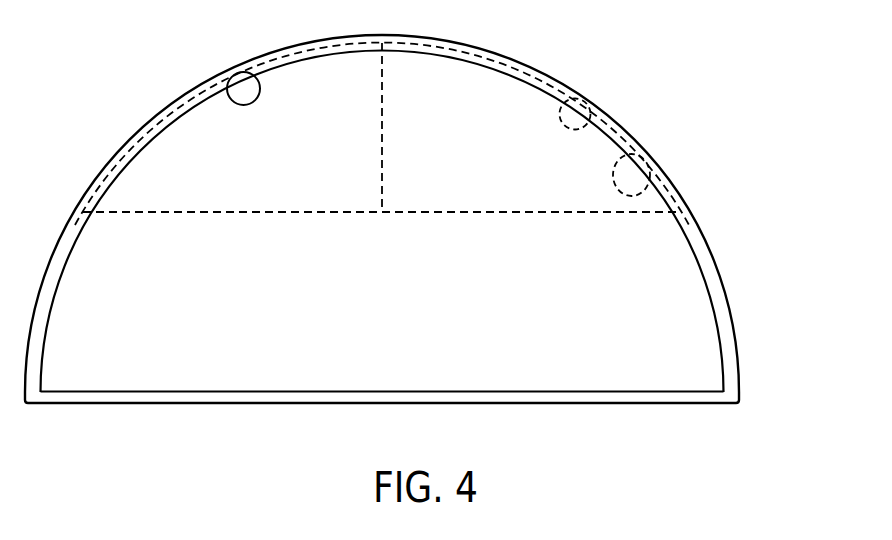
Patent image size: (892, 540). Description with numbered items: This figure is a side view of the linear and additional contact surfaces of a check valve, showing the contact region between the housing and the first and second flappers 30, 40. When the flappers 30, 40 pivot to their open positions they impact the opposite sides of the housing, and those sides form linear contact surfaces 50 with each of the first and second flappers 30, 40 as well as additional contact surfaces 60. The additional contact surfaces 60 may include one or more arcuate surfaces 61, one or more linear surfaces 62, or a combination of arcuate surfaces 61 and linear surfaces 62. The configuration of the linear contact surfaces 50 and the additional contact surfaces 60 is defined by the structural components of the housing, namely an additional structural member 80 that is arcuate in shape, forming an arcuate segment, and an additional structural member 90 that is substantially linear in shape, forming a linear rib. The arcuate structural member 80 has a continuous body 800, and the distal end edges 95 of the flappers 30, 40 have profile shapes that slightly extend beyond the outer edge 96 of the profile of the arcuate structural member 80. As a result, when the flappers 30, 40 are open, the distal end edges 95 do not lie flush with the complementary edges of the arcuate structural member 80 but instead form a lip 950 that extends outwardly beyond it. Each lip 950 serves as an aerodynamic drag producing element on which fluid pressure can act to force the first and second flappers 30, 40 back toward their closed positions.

The first flapper 30 is at (425, 219).
The second flapper 40 is at (740, 323).
The linear contact surfaces 50 is at (559, 216).
The additional contact surfaces 60 is at (443, 60).
The arcuate surfaces 61 is at (255, 76).
The linear surfaces 62 is at (382, 92).
The additional structural member 80 is at (244, 64).
The additional structural member 90 is at (339, 127).
The distal end edges 95 is at (481, 50).
The outer edge 96 is at (568, 98).
The lip 950 is at (601, 109).
The continuous body 800 is at (646, 177).